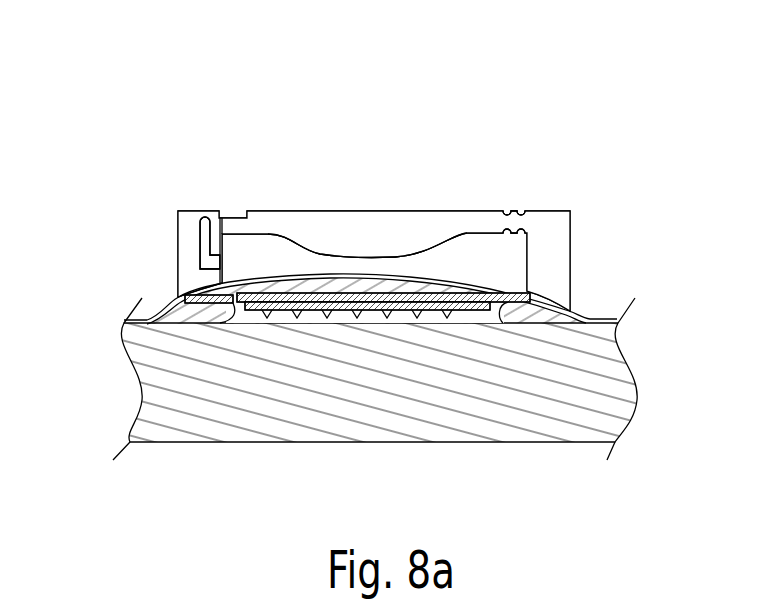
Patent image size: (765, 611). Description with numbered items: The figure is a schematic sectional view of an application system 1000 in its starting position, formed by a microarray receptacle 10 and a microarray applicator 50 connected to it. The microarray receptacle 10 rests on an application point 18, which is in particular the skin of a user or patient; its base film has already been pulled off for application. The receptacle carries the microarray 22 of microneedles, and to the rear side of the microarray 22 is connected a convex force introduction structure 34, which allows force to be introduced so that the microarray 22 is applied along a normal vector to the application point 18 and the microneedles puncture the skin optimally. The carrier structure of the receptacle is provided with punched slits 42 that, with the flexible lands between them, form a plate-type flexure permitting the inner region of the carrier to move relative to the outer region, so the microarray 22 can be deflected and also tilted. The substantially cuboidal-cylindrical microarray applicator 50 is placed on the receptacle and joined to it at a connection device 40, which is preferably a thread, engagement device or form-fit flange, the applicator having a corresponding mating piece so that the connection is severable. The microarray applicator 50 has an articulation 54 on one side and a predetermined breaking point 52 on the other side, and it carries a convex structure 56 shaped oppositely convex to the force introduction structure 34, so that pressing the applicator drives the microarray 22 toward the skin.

The application system 1000 is at (130, 148).
The microarray receptacle 10 is at (423, 268).
The application point 18 is at (530, 420).
The microarray 22 is at (317, 318).
The convex force introduction structure 34 is at (387, 283).
The connection device 40 is at (577, 305).
The slit 42 is at (497, 278).
The microarray applicator 50 is at (462, 200).
The predetermined breaking point 52 is at (233, 198).
The articulation 54 is at (518, 208).
The convex structure 56 is at (307, 252).